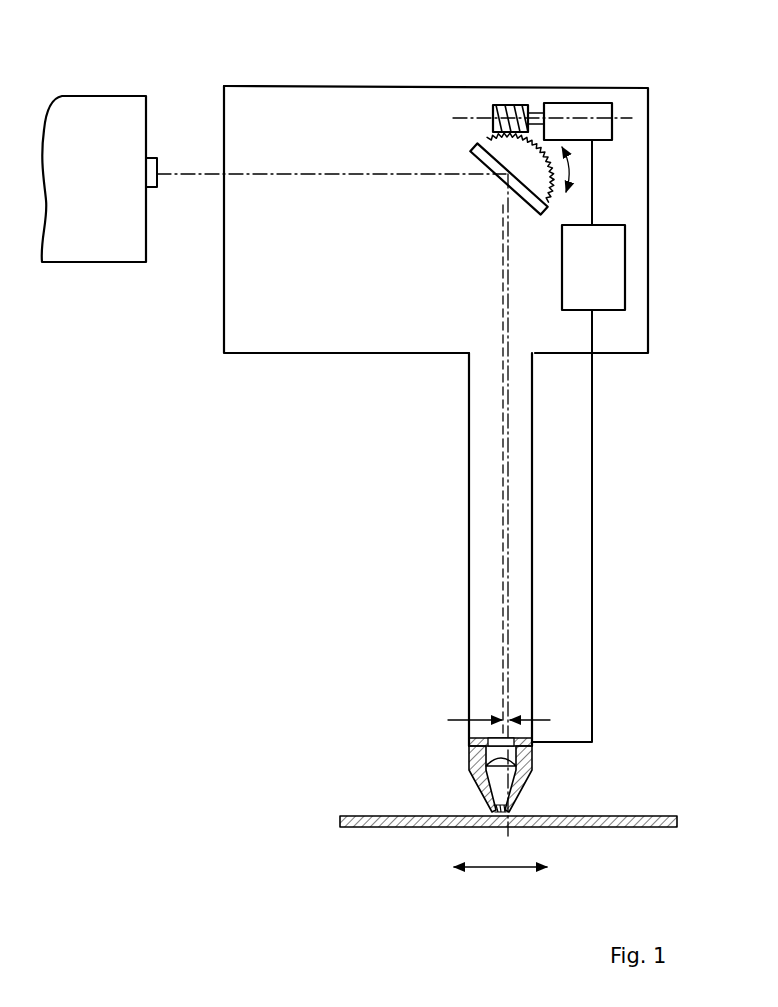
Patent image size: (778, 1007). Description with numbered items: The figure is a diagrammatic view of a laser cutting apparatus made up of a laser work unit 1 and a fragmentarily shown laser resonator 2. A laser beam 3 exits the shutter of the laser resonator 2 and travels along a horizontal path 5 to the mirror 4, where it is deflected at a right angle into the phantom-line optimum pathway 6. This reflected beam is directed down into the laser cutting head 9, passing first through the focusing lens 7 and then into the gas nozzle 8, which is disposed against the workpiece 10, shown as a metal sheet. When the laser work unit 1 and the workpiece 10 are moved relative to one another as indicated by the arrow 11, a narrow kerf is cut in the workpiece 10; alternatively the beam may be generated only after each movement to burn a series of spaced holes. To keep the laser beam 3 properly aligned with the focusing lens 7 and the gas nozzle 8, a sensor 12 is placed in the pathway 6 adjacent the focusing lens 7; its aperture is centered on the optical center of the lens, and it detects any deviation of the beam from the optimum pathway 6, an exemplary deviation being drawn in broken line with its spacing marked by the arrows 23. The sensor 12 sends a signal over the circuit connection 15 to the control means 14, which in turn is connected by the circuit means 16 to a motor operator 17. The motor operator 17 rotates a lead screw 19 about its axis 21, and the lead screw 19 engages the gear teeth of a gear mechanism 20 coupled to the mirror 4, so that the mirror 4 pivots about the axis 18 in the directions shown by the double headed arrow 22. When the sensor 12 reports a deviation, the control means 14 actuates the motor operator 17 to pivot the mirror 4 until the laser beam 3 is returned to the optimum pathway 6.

The laser work unit 1 is at (541, 84).
The laser resonator 2 is at (89, 249).
The laser beam 3 is at (268, 172).
The mirror 4 is at (470, 158).
The horizontal path 5 is at (392, 177).
The optimum pathway 6 is at (503, 383).
The focusing lens 7 is at (532, 755).
The gas nozzle 8 is at (510, 809).
The laser cutting head 9 is at (536, 494).
The workpiece 10 is at (612, 816).
The arrow 11 is at (505, 867).
The sensor 12 is at (525, 734).
The control means 14 is at (608, 285).
The circuit connection 15 is at (592, 553).
The circuit means 16 is at (593, 203).
The motor operator 17 is at (582, 113).
The axis 18 is at (492, 108).
The lead screw 19 is at (515, 105).
The gear mechanism 20 is at (552, 200).
The axis 21 is at (461, 113).
The double headed arrow 22 is at (568, 168).
The arrows 23 is at (509, 722).